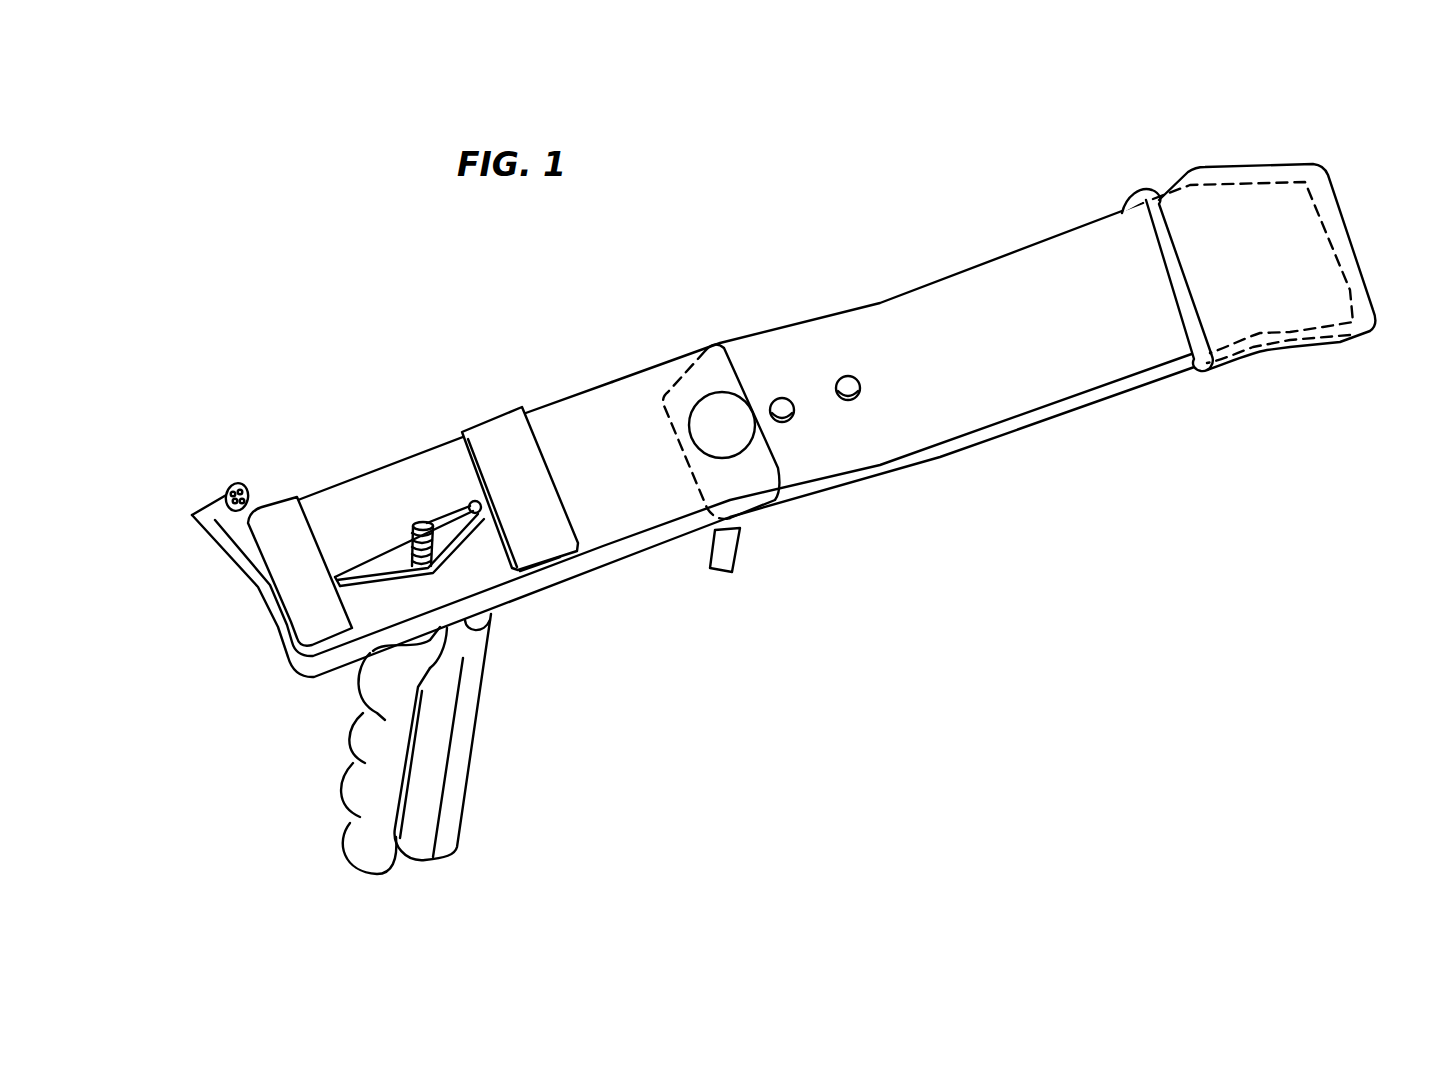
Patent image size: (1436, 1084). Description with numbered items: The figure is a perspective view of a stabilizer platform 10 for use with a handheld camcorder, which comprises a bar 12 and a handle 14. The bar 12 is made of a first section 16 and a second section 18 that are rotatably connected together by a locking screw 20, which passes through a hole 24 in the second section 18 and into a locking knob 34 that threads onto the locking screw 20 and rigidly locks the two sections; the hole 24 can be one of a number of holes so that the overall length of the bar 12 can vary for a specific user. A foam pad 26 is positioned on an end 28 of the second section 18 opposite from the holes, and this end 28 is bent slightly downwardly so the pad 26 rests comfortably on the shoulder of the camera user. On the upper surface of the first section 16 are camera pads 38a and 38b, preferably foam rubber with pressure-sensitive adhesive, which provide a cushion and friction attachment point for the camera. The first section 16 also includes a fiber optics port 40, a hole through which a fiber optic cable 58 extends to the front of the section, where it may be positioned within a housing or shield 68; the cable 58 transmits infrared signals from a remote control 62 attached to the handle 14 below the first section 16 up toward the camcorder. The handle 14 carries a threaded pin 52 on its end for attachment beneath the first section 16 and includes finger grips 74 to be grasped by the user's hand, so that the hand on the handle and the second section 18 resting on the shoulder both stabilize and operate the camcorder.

The stabilizer platform 10 is at (388, 286).
The bar 12 is at (644, 344).
The handle 14 is at (385, 856).
The first section 16 is at (605, 407).
The second section 18 is at (967, 299).
The locking screw 20 is at (722, 414).
The hole 24 is at (860, 388).
The foam pad 26 is at (1238, 197).
The end 28 is at (1377, 332).
The locking knob 34 is at (744, 550).
The camera pad 38a is at (295, 543).
The camera pad 38b is at (506, 433).
The fiber optics port 40 is at (487, 504).
The threaded pin 52 is at (426, 522).
The fiber optic cable 58 is at (482, 513).
The remote control 62 is at (463, 740).
The housing or shield 68 is at (250, 499).
The finger grips 74 is at (365, 738).